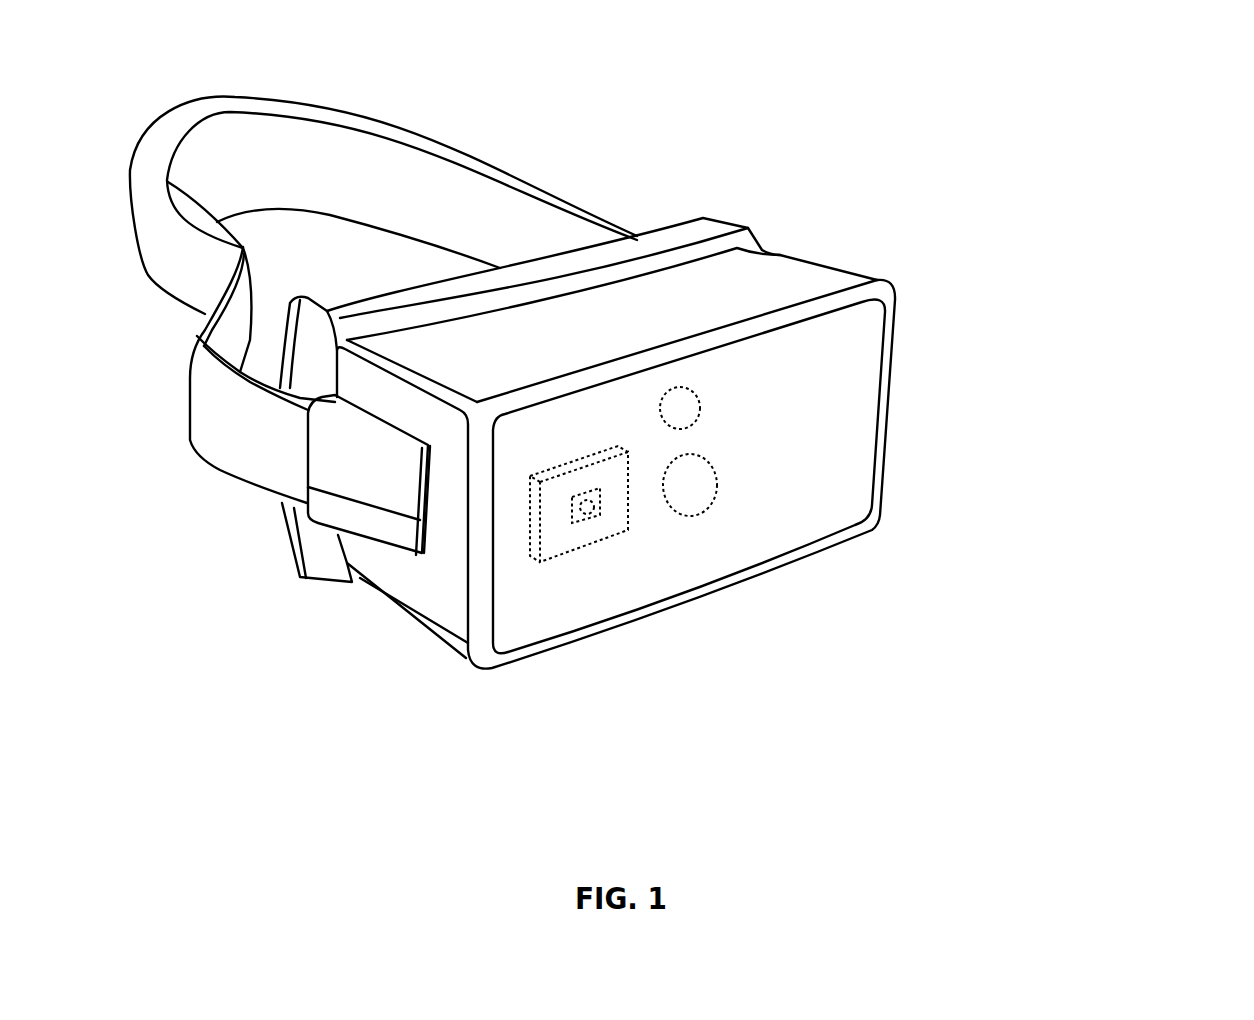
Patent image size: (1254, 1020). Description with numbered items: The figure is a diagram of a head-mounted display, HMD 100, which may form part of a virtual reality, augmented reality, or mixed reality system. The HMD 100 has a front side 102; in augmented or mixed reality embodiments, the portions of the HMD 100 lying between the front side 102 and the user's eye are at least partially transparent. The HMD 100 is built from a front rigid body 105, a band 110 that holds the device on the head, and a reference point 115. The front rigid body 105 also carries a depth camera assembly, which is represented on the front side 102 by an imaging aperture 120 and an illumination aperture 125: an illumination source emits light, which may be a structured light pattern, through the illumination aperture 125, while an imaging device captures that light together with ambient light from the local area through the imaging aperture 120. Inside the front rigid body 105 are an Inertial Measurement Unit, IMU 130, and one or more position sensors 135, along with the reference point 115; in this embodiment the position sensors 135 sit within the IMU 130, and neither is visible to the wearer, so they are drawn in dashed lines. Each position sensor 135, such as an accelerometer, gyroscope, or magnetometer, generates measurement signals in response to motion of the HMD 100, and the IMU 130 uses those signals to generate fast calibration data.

The head-mounted display (HMD) 100 is at (981, 84).
The front side 102 is at (785, 467).
The front rigid body 105 is at (887, 283).
The band 110 is at (522, 178).
The reference point 115 is at (590, 514).
The imaging aperture 120 is at (717, 485).
The illumination aperture 125 is at (694, 394).
The Inertial Measurement Unit (IMU) 130 is at (630, 521).
The position sensors 135 is at (574, 522).